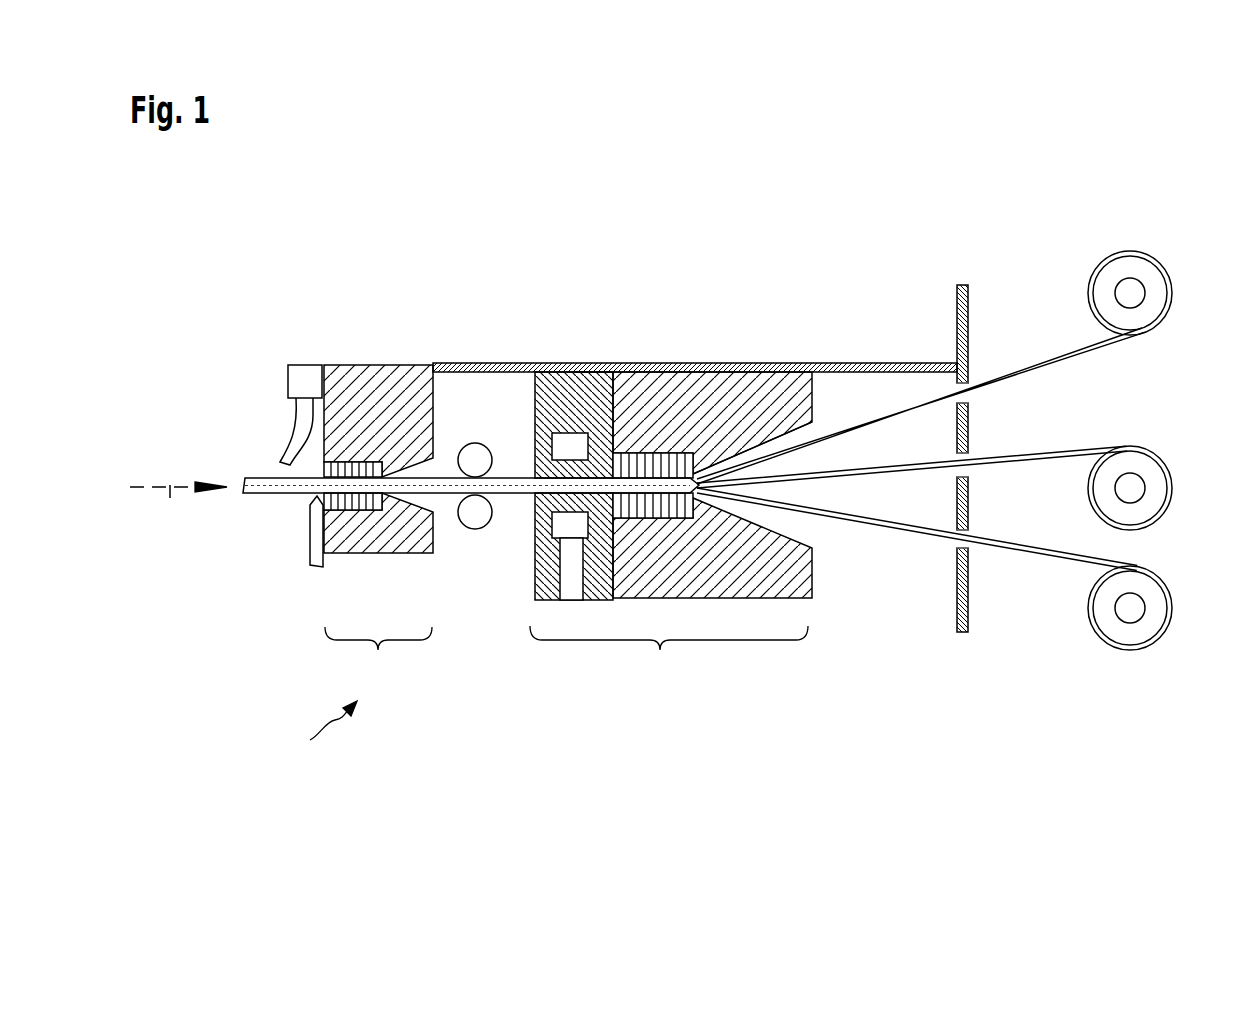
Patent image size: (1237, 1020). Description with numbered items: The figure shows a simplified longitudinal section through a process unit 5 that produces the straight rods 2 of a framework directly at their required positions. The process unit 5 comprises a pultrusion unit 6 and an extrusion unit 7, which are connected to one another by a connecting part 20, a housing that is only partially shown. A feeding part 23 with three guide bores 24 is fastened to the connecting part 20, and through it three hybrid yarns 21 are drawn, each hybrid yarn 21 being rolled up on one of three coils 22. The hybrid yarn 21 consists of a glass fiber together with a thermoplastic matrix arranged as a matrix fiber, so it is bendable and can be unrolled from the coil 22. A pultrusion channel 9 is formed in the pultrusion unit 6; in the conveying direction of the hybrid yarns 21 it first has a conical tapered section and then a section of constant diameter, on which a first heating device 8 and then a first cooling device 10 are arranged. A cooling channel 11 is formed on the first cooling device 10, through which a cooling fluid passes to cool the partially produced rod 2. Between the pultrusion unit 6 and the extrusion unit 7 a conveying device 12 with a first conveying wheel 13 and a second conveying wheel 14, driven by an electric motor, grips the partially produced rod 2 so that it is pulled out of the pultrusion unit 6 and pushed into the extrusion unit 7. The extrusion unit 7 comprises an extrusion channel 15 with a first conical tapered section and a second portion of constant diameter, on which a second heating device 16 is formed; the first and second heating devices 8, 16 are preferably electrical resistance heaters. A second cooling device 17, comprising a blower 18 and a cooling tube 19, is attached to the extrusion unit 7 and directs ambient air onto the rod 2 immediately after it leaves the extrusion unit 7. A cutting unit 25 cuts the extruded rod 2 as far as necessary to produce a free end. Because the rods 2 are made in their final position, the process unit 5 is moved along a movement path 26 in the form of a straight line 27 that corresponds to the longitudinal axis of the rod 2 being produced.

The rod 2 is at (277, 490).
The process unit 5 is at (329, 735).
The pultrusion unit 6 is at (663, 503).
The extrusion unit 7 is at (378, 488).
The first heating device 8 is at (672, 508).
The pultrusion channel 9 is at (650, 485).
The first cooling device 10 is at (598, 375).
The cooling channel 11 is at (562, 440).
The conveying device 12 is at (449, 486).
The first conveying wheel 13 is at (472, 452).
The second conveying wheel 14 is at (472, 531).
The extrusion channel 15 is at (403, 500).
The second heating device 16 is at (348, 505).
The second cooling device 17 is at (253, 384).
The blower 18 is at (302, 380).
The cooling tube 19 is at (293, 433).
The connecting part 20 is at (505, 368).
The hybrid yarn 21 is at (1028, 373).
The coil 22 is at (1133, 294).
The feeding part 23 is at (957, 303).
The guide bore 24 is at (957, 389).
The cutting unit 25 is at (313, 543).
The movement path 26 is at (175, 546).
The straight line 27 is at (172, 498).